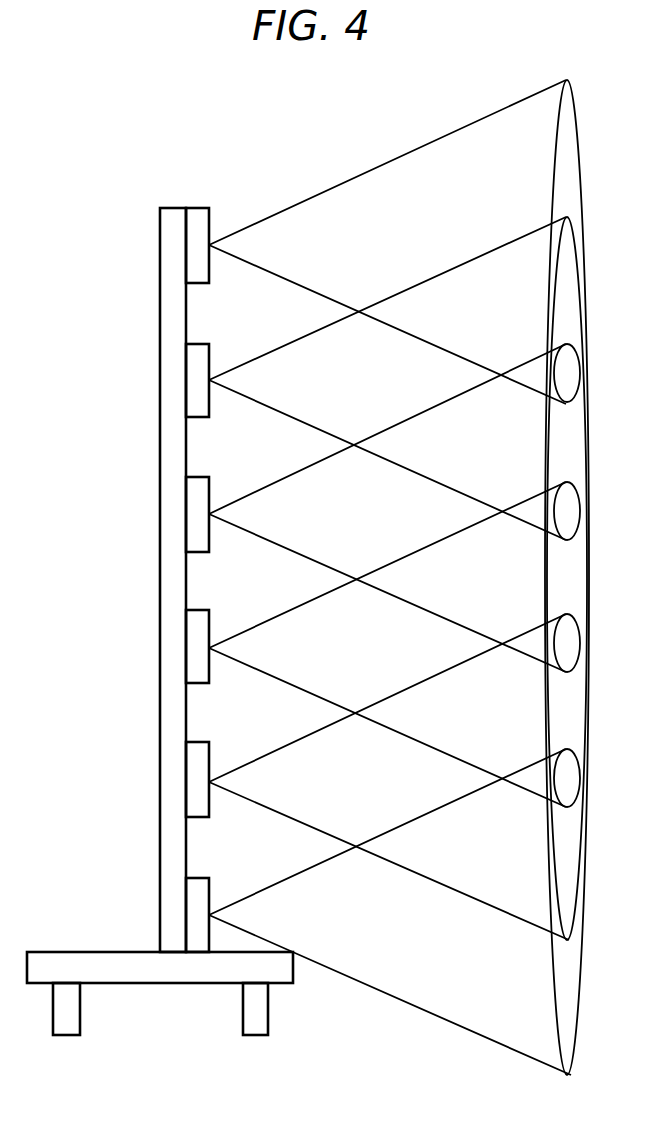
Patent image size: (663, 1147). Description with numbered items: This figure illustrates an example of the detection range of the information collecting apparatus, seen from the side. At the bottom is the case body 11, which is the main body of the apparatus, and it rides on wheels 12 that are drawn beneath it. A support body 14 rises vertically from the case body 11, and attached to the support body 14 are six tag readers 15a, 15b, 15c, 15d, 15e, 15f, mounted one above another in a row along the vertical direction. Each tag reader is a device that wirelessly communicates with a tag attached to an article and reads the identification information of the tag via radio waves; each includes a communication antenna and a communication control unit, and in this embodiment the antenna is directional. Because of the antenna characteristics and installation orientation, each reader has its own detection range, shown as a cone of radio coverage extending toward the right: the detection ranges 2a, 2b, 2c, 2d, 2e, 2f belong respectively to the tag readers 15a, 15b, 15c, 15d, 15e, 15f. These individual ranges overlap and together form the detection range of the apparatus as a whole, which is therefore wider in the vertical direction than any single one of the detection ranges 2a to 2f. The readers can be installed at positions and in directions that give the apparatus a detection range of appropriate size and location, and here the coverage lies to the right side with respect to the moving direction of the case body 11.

The detection range 2a is at (293, 221).
The detection range 2b is at (293, 360).
The detection range 2c is at (293, 484).
The detection range 2d is at (293, 624).
The detection range 2e is at (293, 758).
The detection range 2f is at (293, 891).
The case body 11 is at (165, 975).
The wheels 12 is at (72, 1032).
The support body 14 is at (160, 314).
The tag reader 15a is at (196, 247).
The tag reader 15b is at (196, 382).
The tag reader 15c is at (196, 516).
The tag reader 15d is at (196, 650).
The tag reader 15e is at (196, 784).
The tag reader 15f is at (196, 912).